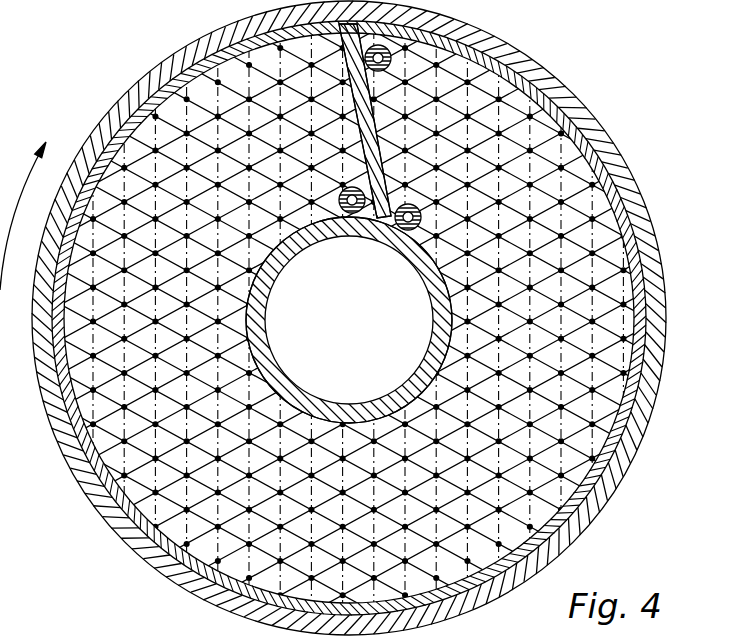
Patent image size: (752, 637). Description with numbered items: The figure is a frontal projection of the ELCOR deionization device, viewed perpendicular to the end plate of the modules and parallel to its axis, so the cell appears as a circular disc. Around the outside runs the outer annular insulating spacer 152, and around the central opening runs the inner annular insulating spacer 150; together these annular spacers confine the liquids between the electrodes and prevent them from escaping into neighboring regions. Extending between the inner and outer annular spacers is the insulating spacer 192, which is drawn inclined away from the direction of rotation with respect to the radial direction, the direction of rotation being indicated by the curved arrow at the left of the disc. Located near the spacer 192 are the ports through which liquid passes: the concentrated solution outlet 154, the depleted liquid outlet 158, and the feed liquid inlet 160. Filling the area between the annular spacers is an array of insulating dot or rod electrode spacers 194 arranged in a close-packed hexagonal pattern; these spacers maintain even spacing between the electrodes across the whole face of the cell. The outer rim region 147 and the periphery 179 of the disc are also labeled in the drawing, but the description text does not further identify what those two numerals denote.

The outer rim ring 147 is at (590, 124).
The inner annular insulating spacer 150 is at (290, 384).
The outer annular insulating spacer 152 is at (250, 45).
The concentrated solution outlet 154 is at (400, 43).
The depleted liquid outlet 158 is at (352, 211).
The feed liquid inlet 160 is at (408, 229).
The outer periphery 179 is at (132, 84).
The insulating spacer 192 is at (357, 108).
The insulating dot or rod electrode spacers 194 is at (595, 322).